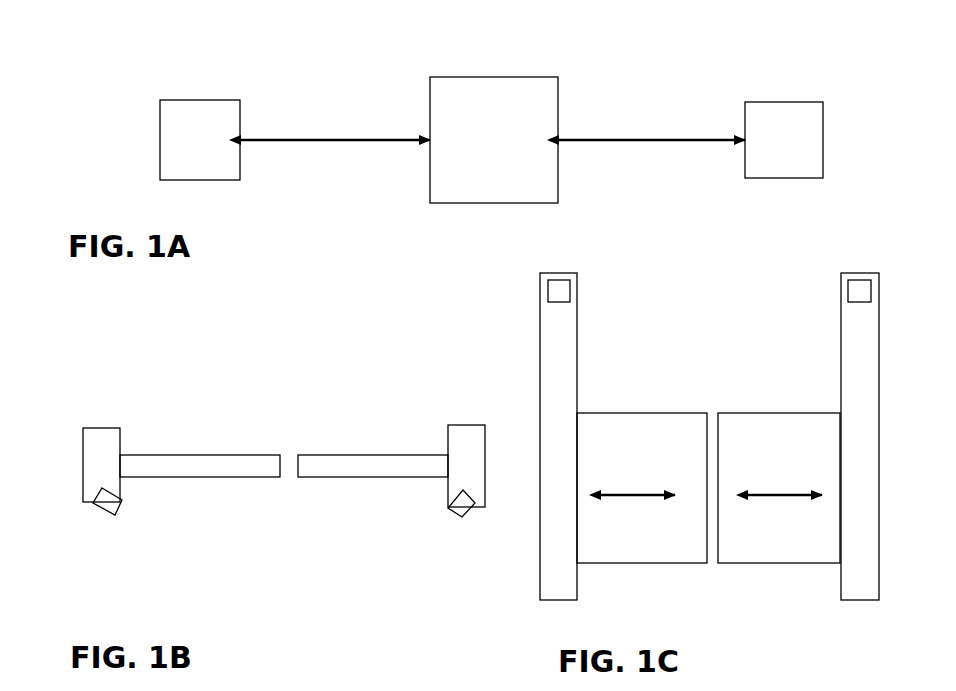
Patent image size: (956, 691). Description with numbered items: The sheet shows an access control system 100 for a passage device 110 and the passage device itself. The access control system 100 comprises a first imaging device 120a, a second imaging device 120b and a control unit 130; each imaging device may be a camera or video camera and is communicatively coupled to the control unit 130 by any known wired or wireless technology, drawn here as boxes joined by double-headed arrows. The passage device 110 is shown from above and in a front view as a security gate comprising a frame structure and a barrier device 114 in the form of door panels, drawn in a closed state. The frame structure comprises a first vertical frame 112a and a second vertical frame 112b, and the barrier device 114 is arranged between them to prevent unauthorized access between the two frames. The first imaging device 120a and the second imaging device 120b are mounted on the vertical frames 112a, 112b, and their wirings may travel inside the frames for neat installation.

In FIG. 1A, the access control system 100 is at (167, 44).
In FIG. 1B, the passage device 110 is at (128, 338).
In FIG. 1C, the passage device 110 is at (727, 312).
In FIG. 1B, the first vertical frame 112a is at (462, 425).
In FIG. 1C, the first vertical frame 112a is at (879, 342).
In FIG. 1B, the second vertical frame 112b is at (108, 428).
In FIG. 1C, the second vertical frame 112b is at (539, 350).
In FIG. 1B, the barrier device 114 is at (342, 453).
In FIG. 1C, the barrier device 114 is at (783, 565).
In FIG. 1A, the first imaging device 120a is at (823, 128).
In FIG. 1B, the first imaging device 120a is at (458, 522).
In FIG. 1C, the first imaging device 120a is at (848, 288).
In FIG. 1A, the second imaging device 120b is at (160, 147).
In FIG. 1B, the second imaging device 120b is at (105, 518).
In FIG. 1C, the second imaging device 120b is at (570, 293).
In FIG. 1A, the control unit 130 is at (558, 102).